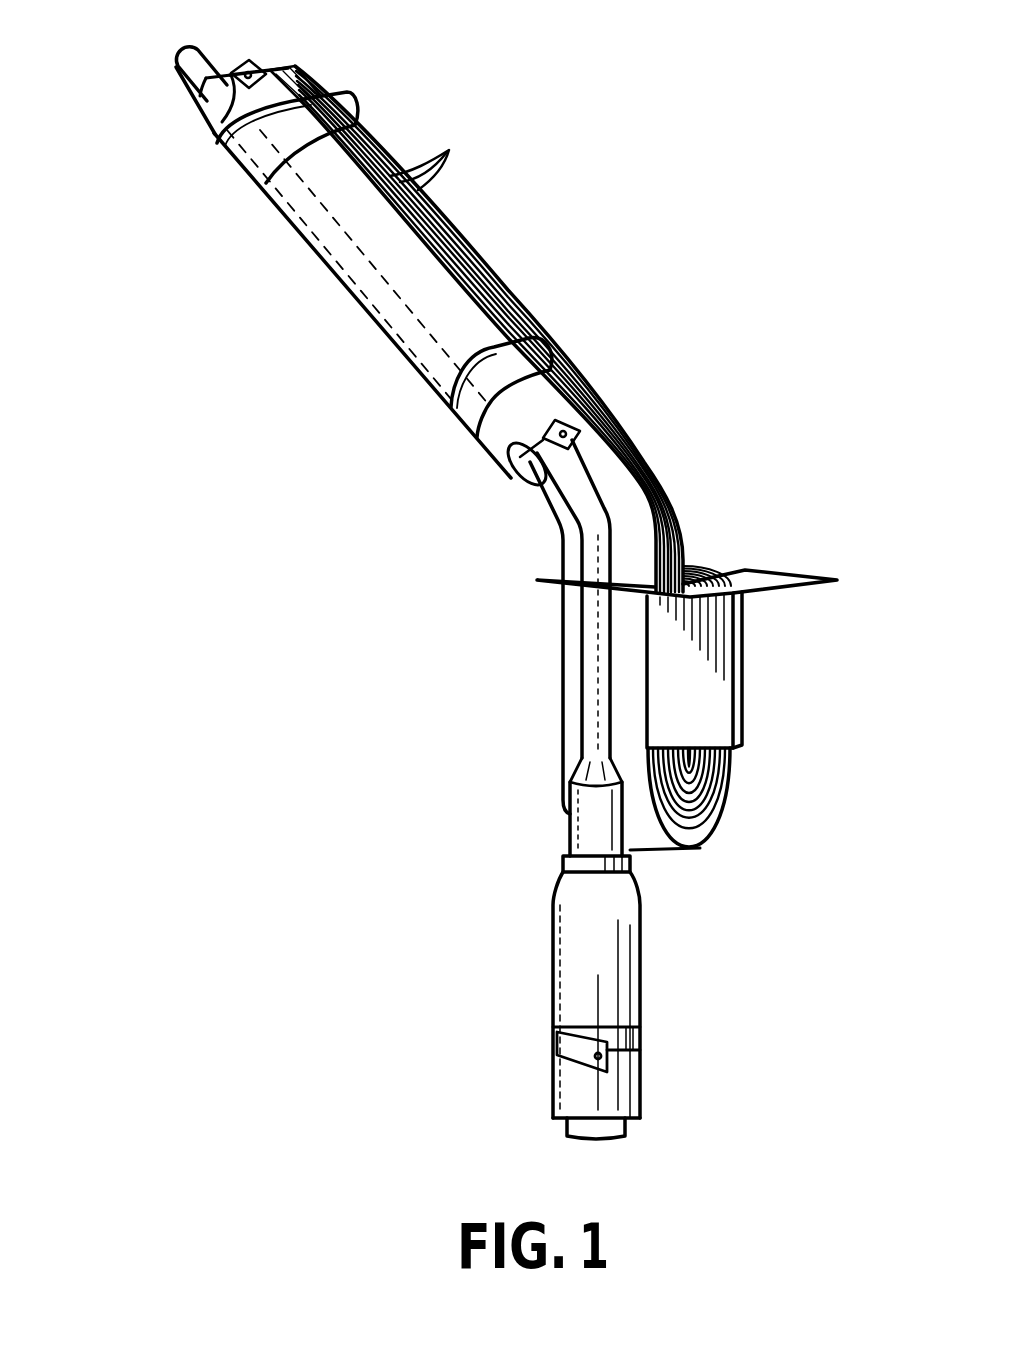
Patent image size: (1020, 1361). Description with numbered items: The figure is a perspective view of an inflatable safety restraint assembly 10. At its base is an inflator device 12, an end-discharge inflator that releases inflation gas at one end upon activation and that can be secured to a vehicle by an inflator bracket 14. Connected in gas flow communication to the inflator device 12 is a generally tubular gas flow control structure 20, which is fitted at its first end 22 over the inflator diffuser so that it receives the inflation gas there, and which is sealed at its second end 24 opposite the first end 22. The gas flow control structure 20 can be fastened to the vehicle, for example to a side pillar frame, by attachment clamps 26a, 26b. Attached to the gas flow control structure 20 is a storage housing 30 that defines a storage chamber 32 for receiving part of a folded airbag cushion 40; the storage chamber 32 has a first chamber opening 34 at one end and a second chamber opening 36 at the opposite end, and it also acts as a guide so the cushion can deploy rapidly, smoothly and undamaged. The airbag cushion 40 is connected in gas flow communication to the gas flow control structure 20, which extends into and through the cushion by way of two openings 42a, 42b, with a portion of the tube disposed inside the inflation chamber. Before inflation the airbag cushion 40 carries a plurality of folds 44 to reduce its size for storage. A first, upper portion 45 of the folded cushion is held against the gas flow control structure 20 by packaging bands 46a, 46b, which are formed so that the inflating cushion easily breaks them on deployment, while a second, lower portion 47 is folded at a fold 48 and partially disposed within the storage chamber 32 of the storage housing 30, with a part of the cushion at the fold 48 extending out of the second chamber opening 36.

The inflatable safety restraint assembly 10 is at (204, 716).
The inflator device 12 is at (553, 990).
The inflator bracket 14 is at (640, 1042).
The gas flow control structure 20 is at (560, 525).
The first end 22 is at (566, 856).
The second end 24 is at (180, 70).
The attachment clamp 26a is at (252, 62).
The attachment clamp 26b is at (544, 455).
The storage housing 30 is at (745, 693).
The storage chamber 32 is at (742, 560).
The first chamber opening 34 is at (746, 570).
The second chamber opening 36 is at (742, 752).
The airbag cushion 40 is at (297, 232).
The opening 42a is at (210, 132).
The opening 42b is at (518, 466).
The folds 44 is at (430, 148).
The first, upper portion 45 is at (521, 289).
The packaging band 46a is at (342, 110).
The packaging band 46b is at (528, 346).
The second, lower portion 47 is at (545, 750).
The fold 48 is at (705, 858).